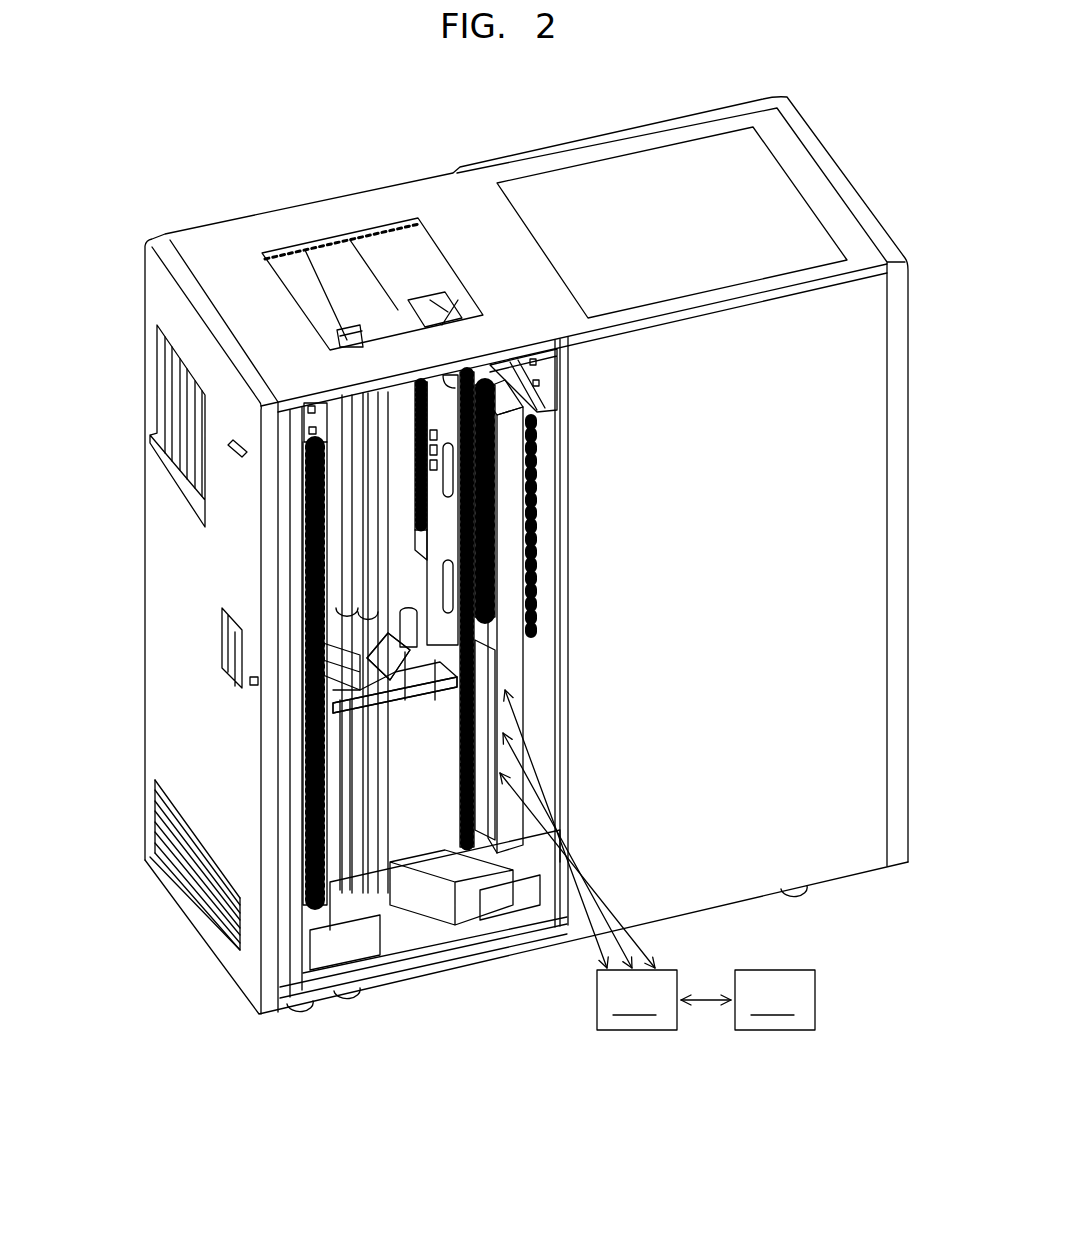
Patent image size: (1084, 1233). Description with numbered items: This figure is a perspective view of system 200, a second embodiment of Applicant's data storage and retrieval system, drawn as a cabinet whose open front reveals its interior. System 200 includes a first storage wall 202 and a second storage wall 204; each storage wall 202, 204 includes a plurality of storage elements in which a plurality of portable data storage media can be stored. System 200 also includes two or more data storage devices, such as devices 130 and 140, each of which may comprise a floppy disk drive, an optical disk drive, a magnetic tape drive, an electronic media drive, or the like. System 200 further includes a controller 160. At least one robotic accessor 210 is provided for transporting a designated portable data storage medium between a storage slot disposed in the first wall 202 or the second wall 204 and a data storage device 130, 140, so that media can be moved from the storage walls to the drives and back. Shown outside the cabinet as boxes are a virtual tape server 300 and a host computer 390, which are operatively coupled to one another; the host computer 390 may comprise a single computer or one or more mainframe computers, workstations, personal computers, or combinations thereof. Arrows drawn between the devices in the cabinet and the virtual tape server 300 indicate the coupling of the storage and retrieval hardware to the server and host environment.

The system 200 is at (333, 1018).
The first storage wall 202 is at (510, 457).
The second storage wall 204 is at (302, 535).
The robotic accessor 210 is at (352, 696).
The data storage device 130 is at (457, 718).
The data storage device 140 is at (490, 755).
The controller 160 is at (507, 682).
The virtual tape server 300 is at (588, 860).
The host computer 390 is at (748, 1000).